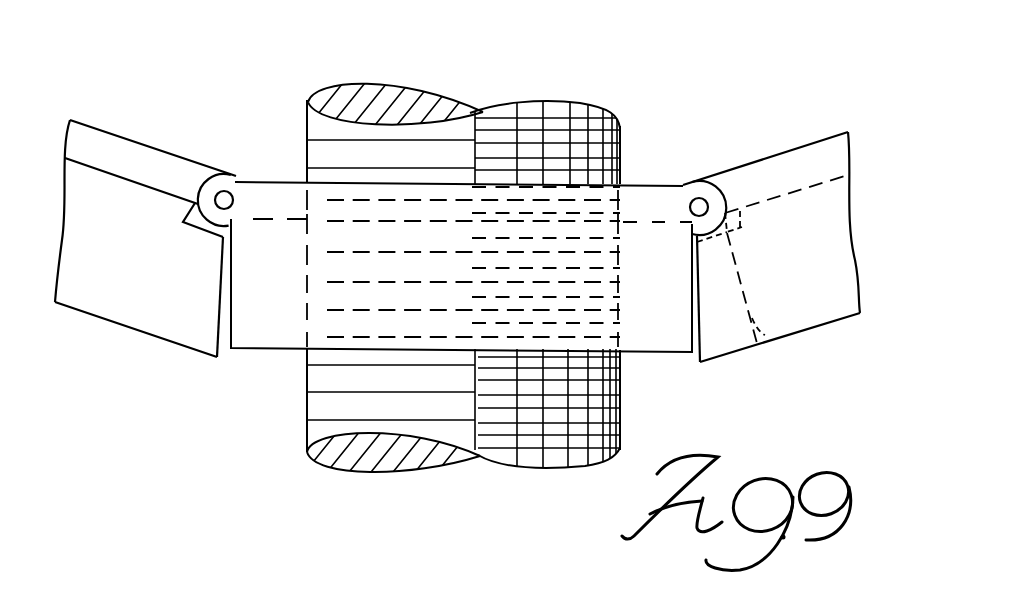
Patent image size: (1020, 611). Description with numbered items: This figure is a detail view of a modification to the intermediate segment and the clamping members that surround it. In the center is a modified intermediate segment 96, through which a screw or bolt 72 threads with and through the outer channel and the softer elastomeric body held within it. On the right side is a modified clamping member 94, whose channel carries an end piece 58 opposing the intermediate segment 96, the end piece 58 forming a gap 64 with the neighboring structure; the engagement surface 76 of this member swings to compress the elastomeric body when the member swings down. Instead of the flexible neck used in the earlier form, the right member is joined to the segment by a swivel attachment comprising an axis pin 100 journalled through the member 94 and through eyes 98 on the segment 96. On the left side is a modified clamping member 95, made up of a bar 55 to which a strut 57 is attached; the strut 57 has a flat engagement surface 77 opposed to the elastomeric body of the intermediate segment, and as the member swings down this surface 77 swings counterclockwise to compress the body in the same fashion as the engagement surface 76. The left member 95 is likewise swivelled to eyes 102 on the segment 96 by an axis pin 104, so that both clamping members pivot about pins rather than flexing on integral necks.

The bar 55 is at (152, 143).
The strut 57 is at (125, 327).
The end piece 58 is at (752, 318).
The gap 64 is at (742, 227).
The screw or bolt 72 is at (620, 128).
The engagement surface 76 is at (698, 357).
The flat engagement surface 77 is at (218, 357).
The modified clamping member 94 is at (803, 140).
The modified clamping member 95 is at (98, 130).
The modified intermediate segment 96 is at (663, 355).
The eyes 98 is at (725, 191).
The axis pin 100 is at (700, 206).
The eyes 102 is at (204, 176).
The axis pin 104 is at (226, 198).